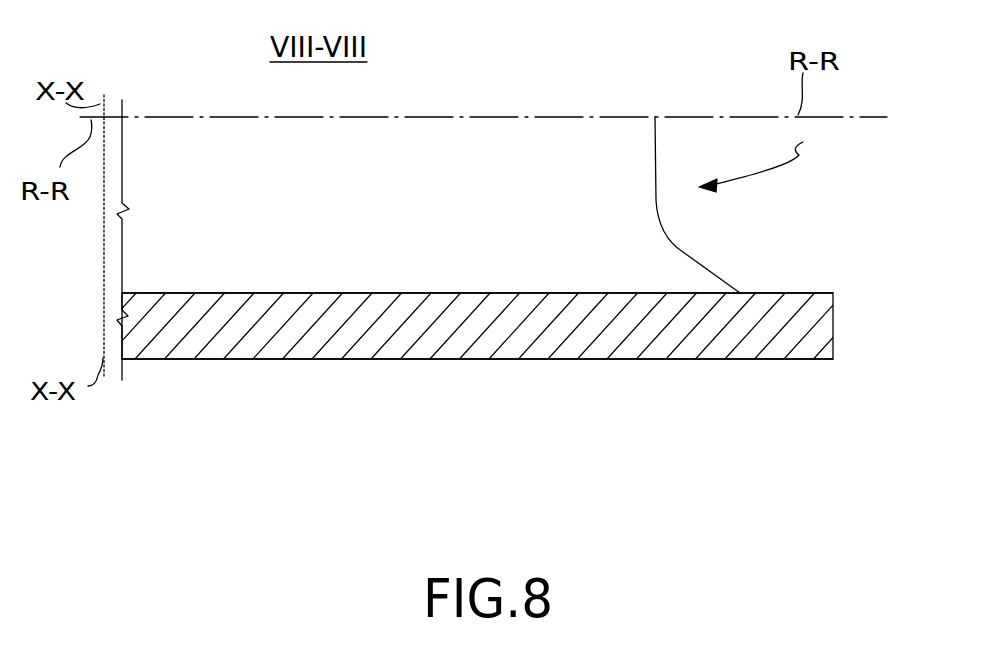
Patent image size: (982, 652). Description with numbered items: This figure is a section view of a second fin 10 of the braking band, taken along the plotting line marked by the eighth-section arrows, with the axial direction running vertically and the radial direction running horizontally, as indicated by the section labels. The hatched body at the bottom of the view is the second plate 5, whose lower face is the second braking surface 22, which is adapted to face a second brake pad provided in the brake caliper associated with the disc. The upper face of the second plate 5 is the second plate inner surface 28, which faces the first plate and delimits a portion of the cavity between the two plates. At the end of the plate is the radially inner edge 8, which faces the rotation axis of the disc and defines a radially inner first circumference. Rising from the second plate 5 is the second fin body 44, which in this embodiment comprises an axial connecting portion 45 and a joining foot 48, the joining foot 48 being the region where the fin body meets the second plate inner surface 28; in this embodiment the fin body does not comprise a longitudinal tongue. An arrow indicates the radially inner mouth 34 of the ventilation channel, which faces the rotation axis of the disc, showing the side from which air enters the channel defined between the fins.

The second plate 5 is at (730, 333).
The radially inner edge 8 is at (835, 332).
The second fin 10 is at (182, 167).
The second braking surface 22 is at (614, 360).
The second plate inner surface 28 is at (793, 291).
The radially inner mouth 34 is at (771, 156).
The second fin body 44 is at (612, 147).
The axial connecting portion 45 is at (553, 168).
The joining foot 48 is at (695, 282).